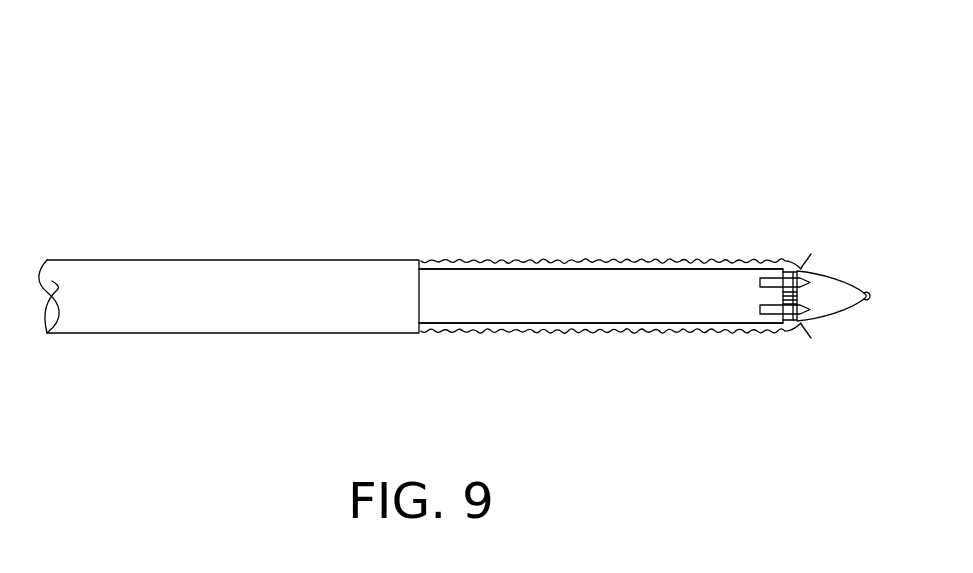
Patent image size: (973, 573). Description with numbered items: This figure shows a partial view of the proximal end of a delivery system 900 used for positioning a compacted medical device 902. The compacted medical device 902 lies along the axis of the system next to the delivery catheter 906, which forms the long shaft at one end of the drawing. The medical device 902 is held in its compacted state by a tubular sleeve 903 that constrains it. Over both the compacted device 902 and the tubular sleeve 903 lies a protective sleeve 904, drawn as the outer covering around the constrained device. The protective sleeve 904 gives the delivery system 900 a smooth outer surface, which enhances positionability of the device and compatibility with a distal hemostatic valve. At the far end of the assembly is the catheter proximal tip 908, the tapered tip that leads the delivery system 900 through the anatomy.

The delivery system 900 is at (470, 120).
The compacted medical device 902 is at (497, 325).
The tubular sleeve 903 is at (675, 270).
The protective sleeve 904 is at (525, 259).
The delivery catheter 906 is at (185, 334).
The catheter proximal tip 908 is at (841, 275).